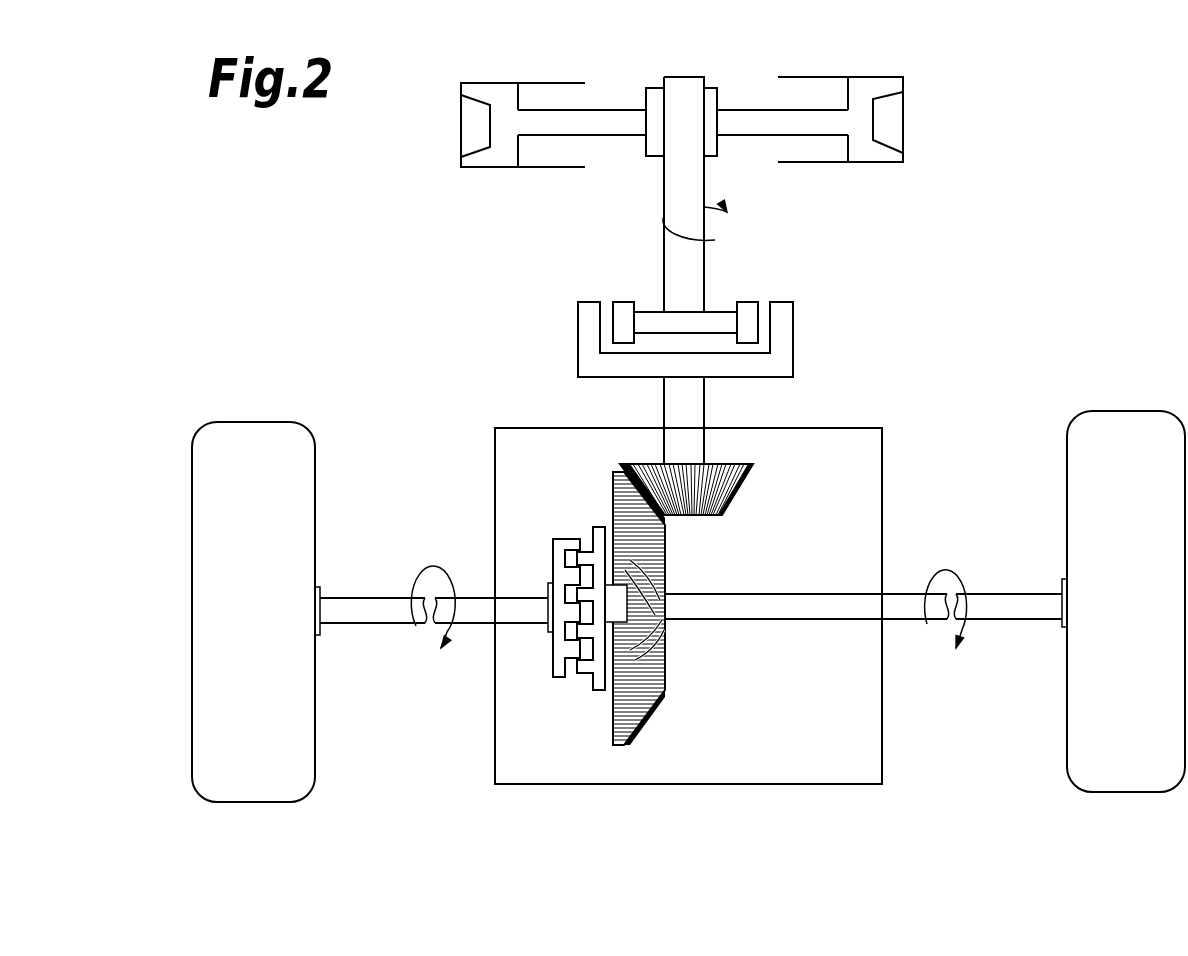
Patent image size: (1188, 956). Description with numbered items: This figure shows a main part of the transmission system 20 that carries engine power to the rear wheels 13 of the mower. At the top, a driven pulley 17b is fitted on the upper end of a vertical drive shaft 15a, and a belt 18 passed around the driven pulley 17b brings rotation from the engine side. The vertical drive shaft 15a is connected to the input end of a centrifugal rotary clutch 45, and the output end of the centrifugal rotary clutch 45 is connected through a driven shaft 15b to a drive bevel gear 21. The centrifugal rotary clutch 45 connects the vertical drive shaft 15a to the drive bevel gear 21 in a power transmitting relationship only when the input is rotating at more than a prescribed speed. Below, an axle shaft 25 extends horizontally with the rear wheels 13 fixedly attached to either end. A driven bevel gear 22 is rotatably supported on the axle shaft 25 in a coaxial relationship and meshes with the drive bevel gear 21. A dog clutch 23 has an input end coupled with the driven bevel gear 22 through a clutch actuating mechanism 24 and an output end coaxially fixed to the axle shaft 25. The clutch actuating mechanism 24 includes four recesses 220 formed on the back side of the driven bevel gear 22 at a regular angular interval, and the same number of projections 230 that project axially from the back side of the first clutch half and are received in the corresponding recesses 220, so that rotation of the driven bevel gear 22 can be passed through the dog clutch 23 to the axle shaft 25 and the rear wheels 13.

The rear wheels 13 is at (252, 802).
The vertical drive shaft 15a is at (703, 272).
The driven shaft 15b is at (697, 400).
The driven pulley 17b is at (757, 105).
The belt 18 is at (905, 124).
The transmission system 20 is at (853, 440).
The drive bevel gear 21 is at (725, 497).
The driven bevel gear 22 is at (658, 700).
The dog clutch 23 is at (575, 607).
The clutch actuating mechanism 24 is at (607, 527).
The axle shaft 25 is at (515, 610).
The centrifugal rotary clutch 45 is at (773, 288).
The recesses 220 is at (672, 640).
The projections 230 is at (665, 570).